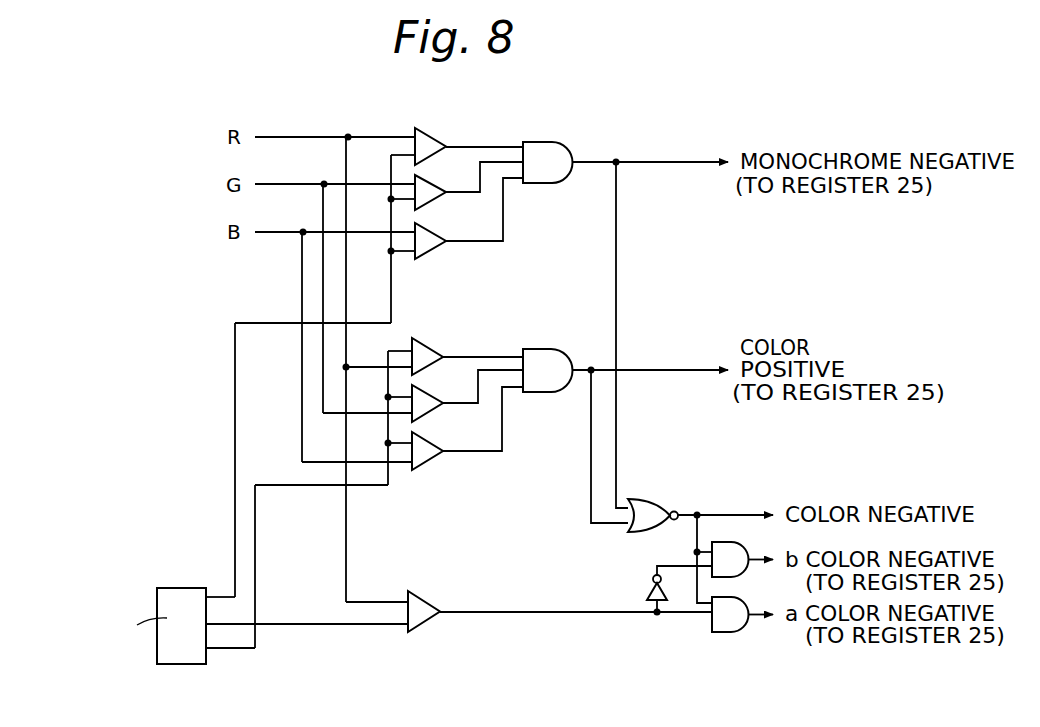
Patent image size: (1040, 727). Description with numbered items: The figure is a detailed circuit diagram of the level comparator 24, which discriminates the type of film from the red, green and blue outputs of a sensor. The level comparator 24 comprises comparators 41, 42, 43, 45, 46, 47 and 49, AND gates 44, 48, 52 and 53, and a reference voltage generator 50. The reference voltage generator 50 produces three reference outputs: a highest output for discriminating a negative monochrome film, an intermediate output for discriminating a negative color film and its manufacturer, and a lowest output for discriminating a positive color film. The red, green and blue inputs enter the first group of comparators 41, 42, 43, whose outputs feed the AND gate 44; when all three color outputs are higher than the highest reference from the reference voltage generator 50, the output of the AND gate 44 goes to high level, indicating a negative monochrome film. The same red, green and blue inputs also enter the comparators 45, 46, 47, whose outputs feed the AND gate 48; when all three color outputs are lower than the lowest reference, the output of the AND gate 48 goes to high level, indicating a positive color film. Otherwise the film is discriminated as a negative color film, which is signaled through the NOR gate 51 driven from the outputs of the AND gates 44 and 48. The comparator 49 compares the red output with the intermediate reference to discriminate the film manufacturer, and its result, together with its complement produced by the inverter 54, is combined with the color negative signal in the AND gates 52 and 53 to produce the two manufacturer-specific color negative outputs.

The level comparator 24 is at (210, 258).
The comparator 41 is at (434, 133).
The comparator 42 is at (435, 180).
The comparator 43 is at (436, 228).
The AND gate 44 is at (553, 140).
The comparator 45 is at (431, 343).
The comparator 46 is at (431, 390).
The comparator 47 is at (431, 437).
The AND gate 48 is at (553, 349).
The comparator 49 is at (420, 592).
The reference voltage generator 50 is at (172, 588).
The NOR gate 51 is at (653, 497).
The AND gate 52 is at (727, 542).
The AND gate 53 is at (737, 597).
The inverter 54 is at (647, 587).